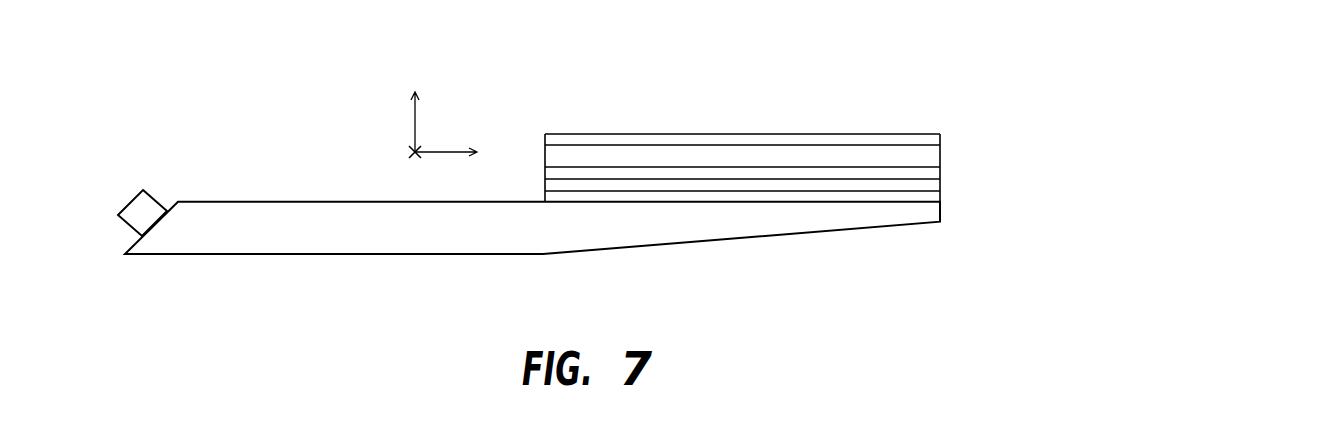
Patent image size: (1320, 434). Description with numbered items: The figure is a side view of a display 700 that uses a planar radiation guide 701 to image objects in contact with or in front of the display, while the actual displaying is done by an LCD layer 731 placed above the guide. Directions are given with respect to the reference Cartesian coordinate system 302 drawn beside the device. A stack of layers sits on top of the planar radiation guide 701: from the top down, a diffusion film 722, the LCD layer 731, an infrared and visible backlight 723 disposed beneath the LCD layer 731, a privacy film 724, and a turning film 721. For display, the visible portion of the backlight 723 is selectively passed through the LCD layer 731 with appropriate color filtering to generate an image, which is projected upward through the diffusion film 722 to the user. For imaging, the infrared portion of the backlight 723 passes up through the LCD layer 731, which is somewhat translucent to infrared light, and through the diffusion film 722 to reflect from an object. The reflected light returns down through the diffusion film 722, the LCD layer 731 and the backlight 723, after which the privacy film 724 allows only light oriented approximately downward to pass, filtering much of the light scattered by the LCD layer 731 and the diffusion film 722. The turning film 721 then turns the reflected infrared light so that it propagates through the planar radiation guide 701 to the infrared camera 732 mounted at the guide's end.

The display 700 is at (353, 132).
The planar radiation guide 701 is at (352, 242).
The infrared camera 732 is at (159, 203).
The reference Cartesian coordinate system 302 is at (445, 148).
The diffusion film 722 is at (940, 140).
The LCD layer 731 is at (940, 154).
The infrared and visible backlight 723 is at (940, 168).
The privacy film 724 is at (940, 182).
The turning film 721 is at (940, 195).